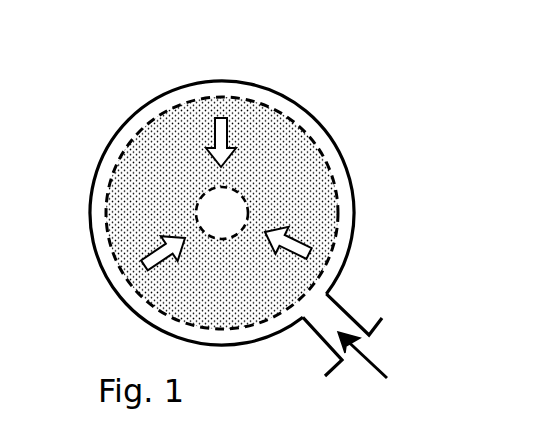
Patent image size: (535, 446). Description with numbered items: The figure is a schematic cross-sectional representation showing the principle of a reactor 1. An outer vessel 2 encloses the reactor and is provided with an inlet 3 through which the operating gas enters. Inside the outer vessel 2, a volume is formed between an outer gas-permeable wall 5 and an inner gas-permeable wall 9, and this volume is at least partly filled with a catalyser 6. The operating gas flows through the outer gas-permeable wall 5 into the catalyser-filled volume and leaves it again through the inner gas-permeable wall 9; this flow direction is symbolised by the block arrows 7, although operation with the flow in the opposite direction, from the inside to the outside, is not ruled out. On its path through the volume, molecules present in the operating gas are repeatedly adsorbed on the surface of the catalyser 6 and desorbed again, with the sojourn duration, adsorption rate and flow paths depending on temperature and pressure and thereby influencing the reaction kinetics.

The reactor 1 is at (383, 173).
The outer vessel 2 is at (318, 125).
The inlet 3 is at (350, 310).
The outer gas-permeable wall 5 is at (233, 330).
The catalyser 6 is at (157, 165).
The block arrows 7 is at (218, 138).
The inner gas-permeable wall 9 is at (236, 186).